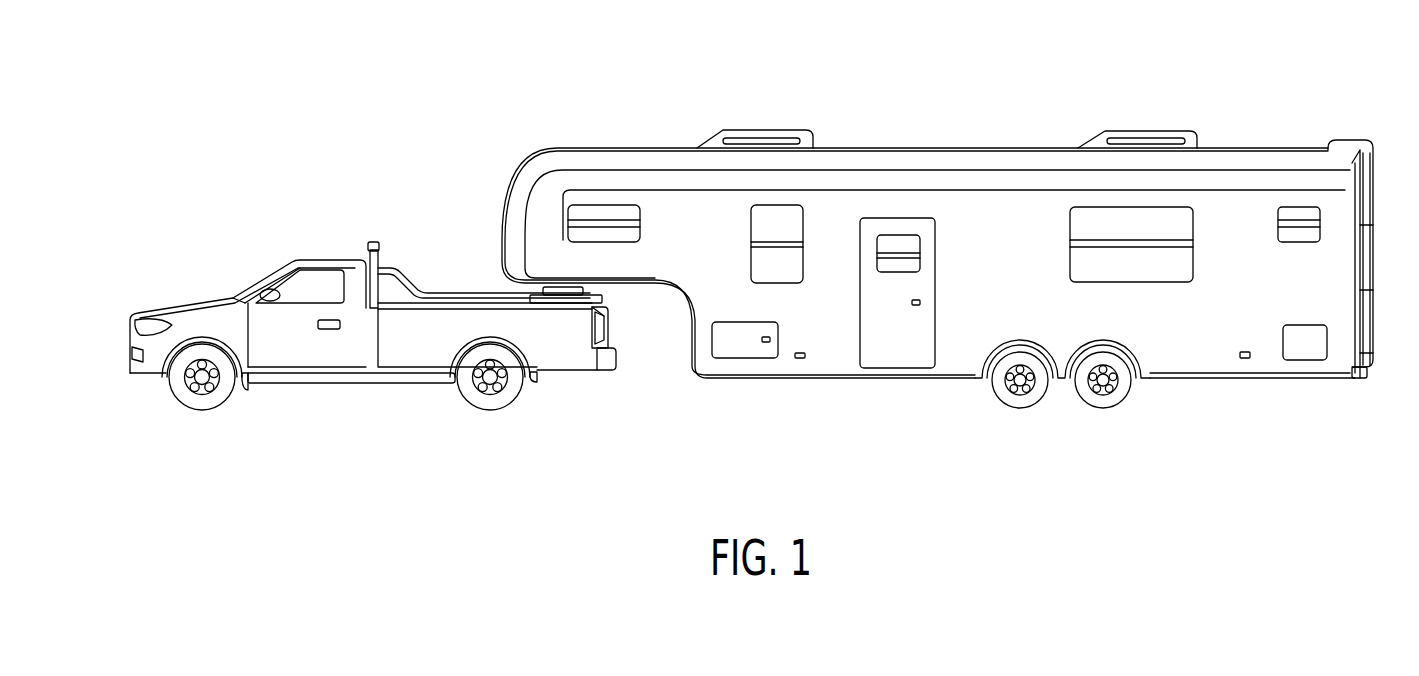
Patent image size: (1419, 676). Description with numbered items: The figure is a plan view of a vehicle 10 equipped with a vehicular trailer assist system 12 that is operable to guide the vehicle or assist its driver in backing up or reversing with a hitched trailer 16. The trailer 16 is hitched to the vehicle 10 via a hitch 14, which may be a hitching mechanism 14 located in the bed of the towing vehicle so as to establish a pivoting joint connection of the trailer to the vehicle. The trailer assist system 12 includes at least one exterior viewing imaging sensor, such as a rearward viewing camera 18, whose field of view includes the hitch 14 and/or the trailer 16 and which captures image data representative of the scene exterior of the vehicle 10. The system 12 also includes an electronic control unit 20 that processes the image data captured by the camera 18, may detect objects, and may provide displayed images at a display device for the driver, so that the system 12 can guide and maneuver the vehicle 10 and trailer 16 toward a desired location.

The vehicle 10 is at (238, 120).
The vehicular trailer assist system 12 is at (398, 184).
The hitch 14 is at (608, 328).
The trailer 16 is at (787, 132).
The rearward viewing camera 18 is at (369, 243).
The electronic control unit 20 is at (210, 260).